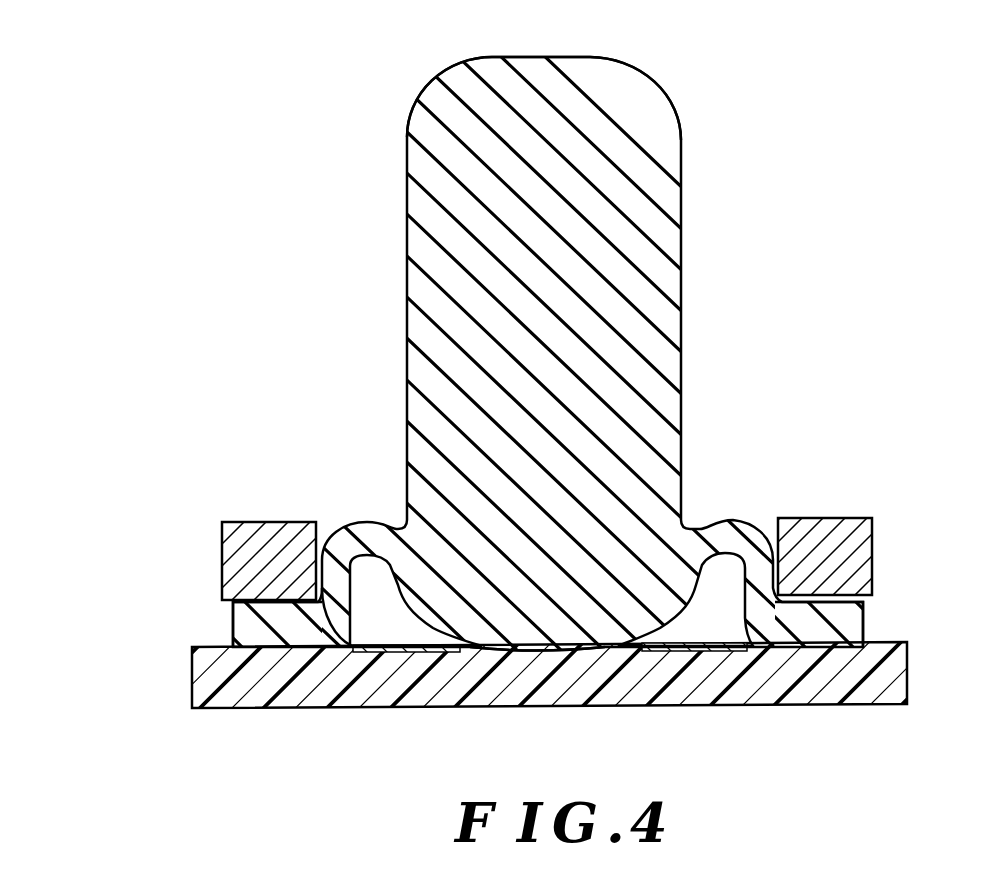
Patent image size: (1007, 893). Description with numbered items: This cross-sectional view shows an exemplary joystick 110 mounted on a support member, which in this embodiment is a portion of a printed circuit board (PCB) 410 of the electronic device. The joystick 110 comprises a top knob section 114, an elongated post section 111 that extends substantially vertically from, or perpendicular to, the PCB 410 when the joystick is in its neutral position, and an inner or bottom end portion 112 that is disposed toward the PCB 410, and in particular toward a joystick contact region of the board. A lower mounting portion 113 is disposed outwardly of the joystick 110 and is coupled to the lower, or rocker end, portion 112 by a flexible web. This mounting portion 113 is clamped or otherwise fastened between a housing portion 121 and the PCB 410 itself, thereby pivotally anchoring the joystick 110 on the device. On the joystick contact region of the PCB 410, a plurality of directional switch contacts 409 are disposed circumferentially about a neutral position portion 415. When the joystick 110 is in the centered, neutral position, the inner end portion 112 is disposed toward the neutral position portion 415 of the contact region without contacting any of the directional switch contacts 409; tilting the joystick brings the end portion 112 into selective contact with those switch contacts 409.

The joystick 110 is at (503, 350).
The elongated post section 111 is at (415, 207).
The end portion 112 is at (421, 611).
The lower mounting portion 113 is at (233, 629).
The top knob section 114 is at (647, 75).
The housing portion 121 is at (873, 556).
The directional switch contacts 409 is at (713, 662).
The printed circuit board 410 is at (907, 660).
The neutral position portion 415 is at (543, 648).